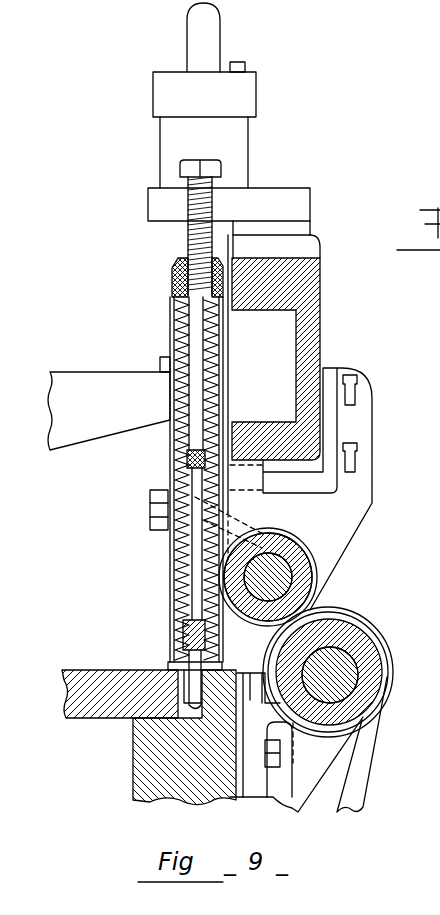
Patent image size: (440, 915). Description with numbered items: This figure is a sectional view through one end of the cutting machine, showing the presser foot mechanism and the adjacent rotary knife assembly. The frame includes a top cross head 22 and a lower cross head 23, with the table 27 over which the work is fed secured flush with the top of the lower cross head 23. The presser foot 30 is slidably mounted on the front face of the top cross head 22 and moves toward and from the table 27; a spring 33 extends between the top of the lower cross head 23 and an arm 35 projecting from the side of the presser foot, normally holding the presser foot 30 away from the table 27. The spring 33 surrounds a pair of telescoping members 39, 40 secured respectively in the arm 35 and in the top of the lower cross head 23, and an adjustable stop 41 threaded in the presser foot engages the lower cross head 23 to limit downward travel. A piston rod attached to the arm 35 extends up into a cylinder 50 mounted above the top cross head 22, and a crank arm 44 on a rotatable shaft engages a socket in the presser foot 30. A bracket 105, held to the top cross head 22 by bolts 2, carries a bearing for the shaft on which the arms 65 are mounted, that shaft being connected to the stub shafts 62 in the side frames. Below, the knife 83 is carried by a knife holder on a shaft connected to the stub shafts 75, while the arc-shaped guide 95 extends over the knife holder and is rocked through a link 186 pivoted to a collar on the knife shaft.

The cylinder 50 is at (183, 137).
The telescoping member 39 is at (177, 276).
The arm 35 is at (172, 286).
The spring 33 is at (173, 337).
The top cross head 22 is at (305, 282).
The crank arm 44 is at (97, 432).
The arm 65 is at (150, 503).
The presser foot 30 is at (170, 551).
The adjustable stop 41 is at (172, 607).
The telescoping member 40 is at (182, 632).
The table 27 is at (118, 692).
The lower cross head 23 is at (160, 760).
The bracket 105 is at (345, 507).
The bolt 2 is at (356, 447).
The stub shaft 62 is at (282, 580).
The arc-shaped guide 95 is at (372, 620).
The stub shaft 75 is at (340, 662).
The knife 83 is at (270, 735).
The link 186 is at (357, 765).